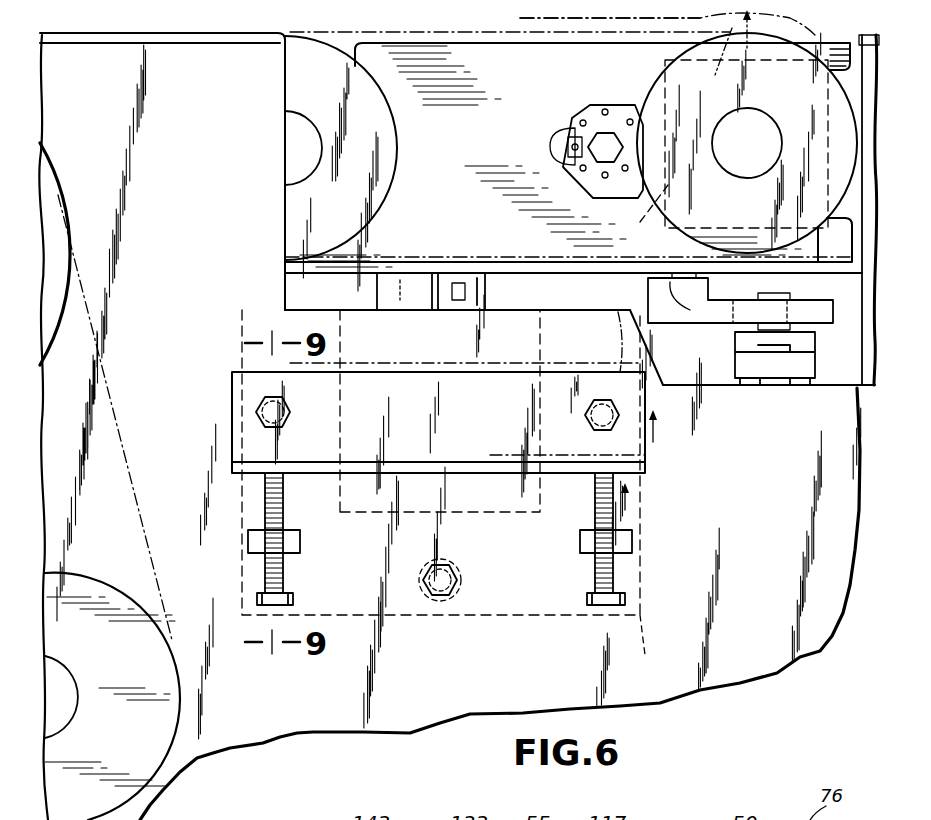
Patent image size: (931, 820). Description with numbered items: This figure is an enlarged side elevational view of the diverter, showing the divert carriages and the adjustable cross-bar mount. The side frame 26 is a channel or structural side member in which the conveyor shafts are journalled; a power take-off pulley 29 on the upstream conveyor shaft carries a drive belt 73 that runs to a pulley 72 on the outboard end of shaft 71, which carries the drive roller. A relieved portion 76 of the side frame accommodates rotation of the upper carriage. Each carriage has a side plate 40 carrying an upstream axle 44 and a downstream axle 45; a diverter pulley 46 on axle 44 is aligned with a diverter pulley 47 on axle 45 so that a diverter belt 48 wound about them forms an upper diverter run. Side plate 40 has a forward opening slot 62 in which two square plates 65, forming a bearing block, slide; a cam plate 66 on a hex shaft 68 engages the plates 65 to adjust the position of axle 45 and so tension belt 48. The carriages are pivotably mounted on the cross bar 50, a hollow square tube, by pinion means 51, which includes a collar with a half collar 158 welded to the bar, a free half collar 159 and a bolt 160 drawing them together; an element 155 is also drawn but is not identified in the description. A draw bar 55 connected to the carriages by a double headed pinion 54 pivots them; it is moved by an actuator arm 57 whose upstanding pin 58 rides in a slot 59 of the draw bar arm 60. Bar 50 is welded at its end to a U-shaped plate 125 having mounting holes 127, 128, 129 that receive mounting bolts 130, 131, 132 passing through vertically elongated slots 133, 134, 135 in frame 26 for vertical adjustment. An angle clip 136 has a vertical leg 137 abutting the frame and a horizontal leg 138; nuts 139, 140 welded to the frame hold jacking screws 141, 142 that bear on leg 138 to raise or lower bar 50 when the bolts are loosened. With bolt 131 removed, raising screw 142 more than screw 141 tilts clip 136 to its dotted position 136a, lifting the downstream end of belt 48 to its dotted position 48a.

The side frame 26 is at (770, 648).
The power take-off pulley 29 is at (55, 212).
The side plate 40 is at (450, 153).
The upstream axle 44 is at (287, 148).
The downstream axle 45 is at (755, 157).
The diverter pulley 46 is at (365, 140).
The diverter pulley 47 is at (738, 210).
The diverter belt 48 is at (580, 30).
The dotted line position of diverter belt 48a is at (719, 66).
The cross bar 50 is at (540, 336).
The pinion means 51 is at (408, 275).
The double headed pinion 54 is at (740, 315).
The draw bar 55 is at (668, 296).
The actuator arm 57 is at (822, 376).
The upstanding pin 58 is at (778, 300).
The slot 59 is at (805, 318).
The draw bar arm 60 is at (725, 318).
The forward opening slot 62 is at (848, 72).
The square plates 65 is at (650, 212).
The cam plate 66 is at (614, 106).
The hex shaft 68 is at (603, 143).
The shaft 71 is at (80, 702).
The pulley 72 is at (140, 752).
The drive belt 73 is at (130, 432).
The relieved portion 76 is at (848, 390).
The U-shaped plate 125 is at (644, 676).
The mounting hole 127 is at (257, 420).
The mounting hole 128 is at (462, 578).
The mounting hole 129 is at (585, 420).
The mounting bolt 130 is at (290, 412).
The mounting bolt 131 is at (428, 595).
The mounting bolt 132 is at (590, 410).
The vertically elongated slot 133 is at (250, 452).
The vertically elongated slot 134 is at (445, 600).
The vertically elongated slot 135 is at (652, 440).
The angle clip 136 is at (392, 398).
The dotted line position of angle clip 136a is at (722, 335).
The vertical leg 137 is at (465, 433).
The horizontal leg 138 is at (456, 478).
The nut 139 is at (248, 540).
The nut 140 is at (632, 540).
The jacking screw 141 is at (285, 575).
The jacking screw 142 is at (613, 575).
The rail 155 is at (432, 278).
The half collar 158 is at (377, 300).
The half collar 159 is at (478, 273).
The bolt 160 is at (466, 291).